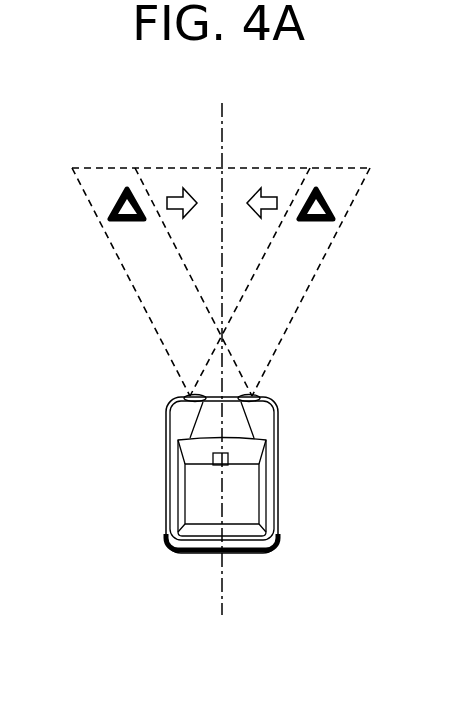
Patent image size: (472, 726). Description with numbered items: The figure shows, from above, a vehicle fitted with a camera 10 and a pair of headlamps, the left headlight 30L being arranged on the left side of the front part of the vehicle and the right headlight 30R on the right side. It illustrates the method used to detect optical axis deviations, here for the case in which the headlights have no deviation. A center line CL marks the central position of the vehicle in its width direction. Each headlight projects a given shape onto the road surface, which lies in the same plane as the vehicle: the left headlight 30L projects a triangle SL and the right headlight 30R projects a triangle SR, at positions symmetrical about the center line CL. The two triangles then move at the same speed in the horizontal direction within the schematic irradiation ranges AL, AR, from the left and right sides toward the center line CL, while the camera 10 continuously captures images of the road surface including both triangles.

The camera 10 is at (223, 463).
The left headlight 30L is at (190, 397).
The right headlight 30R is at (254, 397).
The center line CL is at (222, 122).
The irradiation range AL is at (136, 290).
The irradiation range AR is at (308, 290).
The triangle SL is at (110, 203).
The triangle SR is at (334, 203).